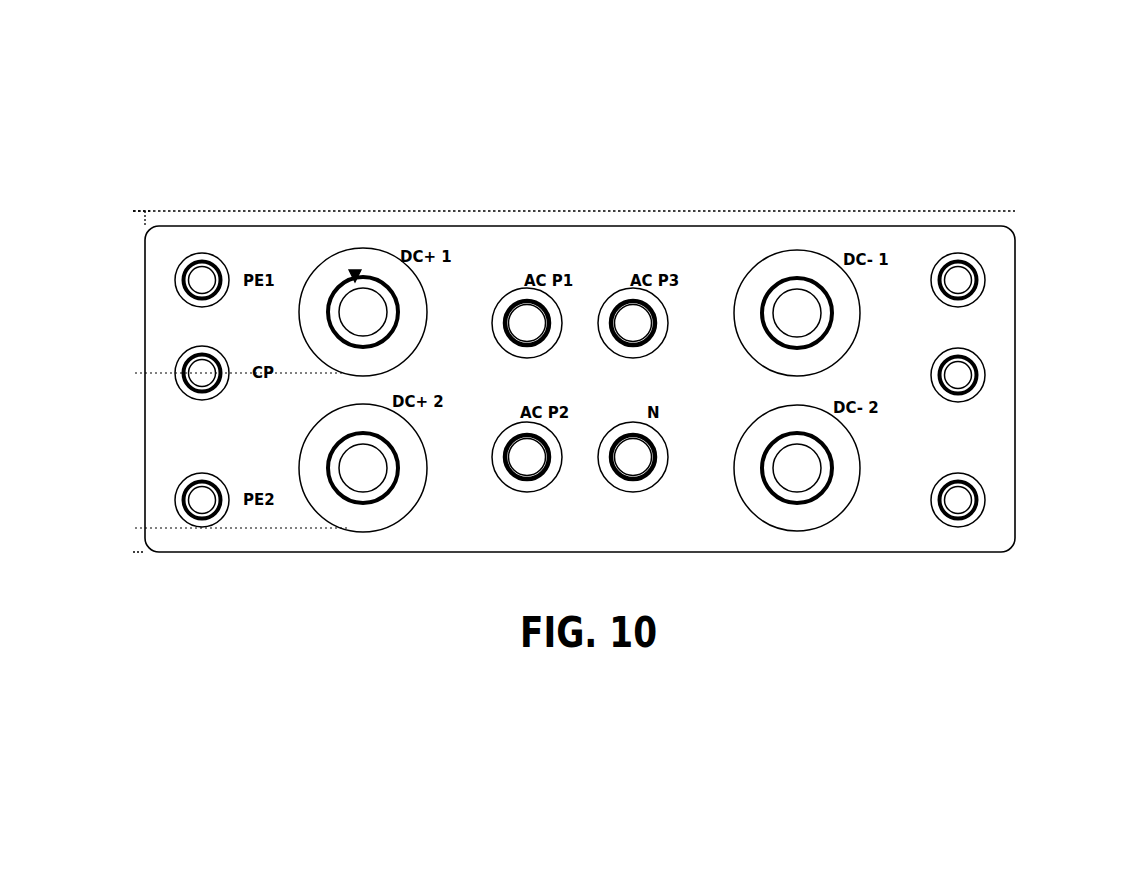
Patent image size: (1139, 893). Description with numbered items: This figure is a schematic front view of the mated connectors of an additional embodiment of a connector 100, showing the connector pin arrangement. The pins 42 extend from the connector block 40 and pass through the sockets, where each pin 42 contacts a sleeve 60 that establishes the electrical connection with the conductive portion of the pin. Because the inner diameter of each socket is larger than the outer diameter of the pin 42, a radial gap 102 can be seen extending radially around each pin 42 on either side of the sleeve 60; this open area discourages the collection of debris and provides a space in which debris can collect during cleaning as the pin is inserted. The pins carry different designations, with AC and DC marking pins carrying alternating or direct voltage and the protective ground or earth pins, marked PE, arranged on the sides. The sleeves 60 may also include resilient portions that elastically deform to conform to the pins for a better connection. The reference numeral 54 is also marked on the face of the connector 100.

The connector 100 is at (1020, 102).
The connector block 40 is at (166, 217).
The connector panel 54 is at (710, 248).
The pin 42 is at (363, 312).
The sleeve 60 is at (390, 322).
The radial gap 102 is at (355, 272).